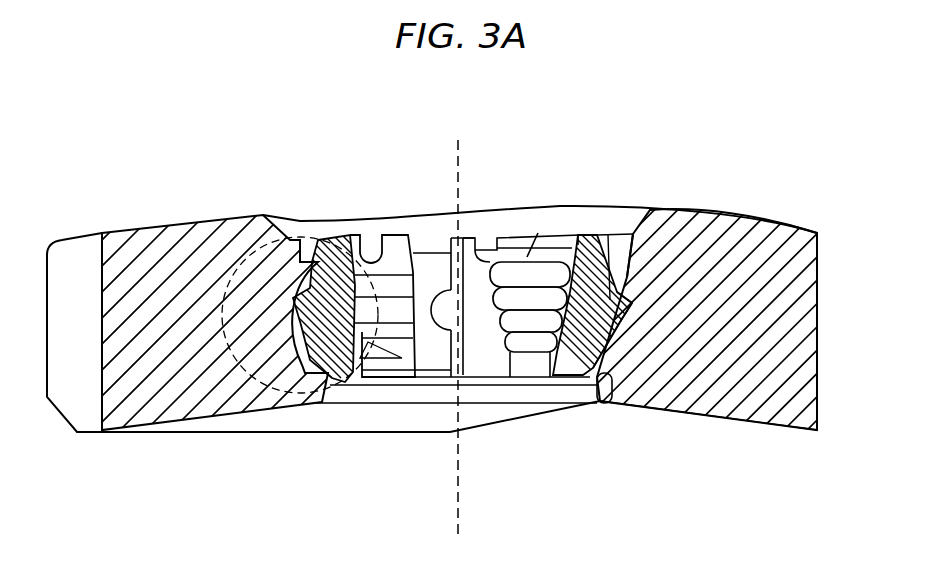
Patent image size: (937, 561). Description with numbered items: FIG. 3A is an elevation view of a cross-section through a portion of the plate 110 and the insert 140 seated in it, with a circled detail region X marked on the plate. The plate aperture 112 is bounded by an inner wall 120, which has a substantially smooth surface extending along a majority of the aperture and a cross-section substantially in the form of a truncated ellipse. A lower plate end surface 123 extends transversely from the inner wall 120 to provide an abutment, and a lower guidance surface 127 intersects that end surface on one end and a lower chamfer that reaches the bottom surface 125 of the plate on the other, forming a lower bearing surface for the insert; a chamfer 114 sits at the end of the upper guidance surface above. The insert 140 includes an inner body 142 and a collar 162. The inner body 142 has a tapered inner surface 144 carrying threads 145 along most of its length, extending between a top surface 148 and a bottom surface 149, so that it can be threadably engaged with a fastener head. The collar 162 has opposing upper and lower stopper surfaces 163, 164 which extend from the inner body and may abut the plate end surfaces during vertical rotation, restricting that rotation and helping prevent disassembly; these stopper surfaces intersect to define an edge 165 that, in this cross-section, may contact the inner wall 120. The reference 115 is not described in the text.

The plate 110 is at (180, 438).
The plate aperture 112 is at (621, 218).
The chamfer 114 is at (558, 217).
The ring segment 115 is at (770, 215).
The inner wall 120 is at (598, 368).
The lower plate end surface 123 is at (610, 377).
The bottom surface 125 is at (730, 423).
The lower guidance surface 127 is at (590, 377).
The insert 140 is at (429, 395).
The inner body 142 is at (584, 216).
The inner surface 144 is at (533, 378).
The threads 145 is at (522, 275).
The top surface 148 is at (345, 253).
The bottom surface 149 is at (343, 380).
The collar 162 is at (637, 333).
The upper stopper surface 163 is at (615, 255).
The lower stopper surface 164 is at (625, 335).
The edge 165 is at (630, 305).
The detail region X is at (247, 249).